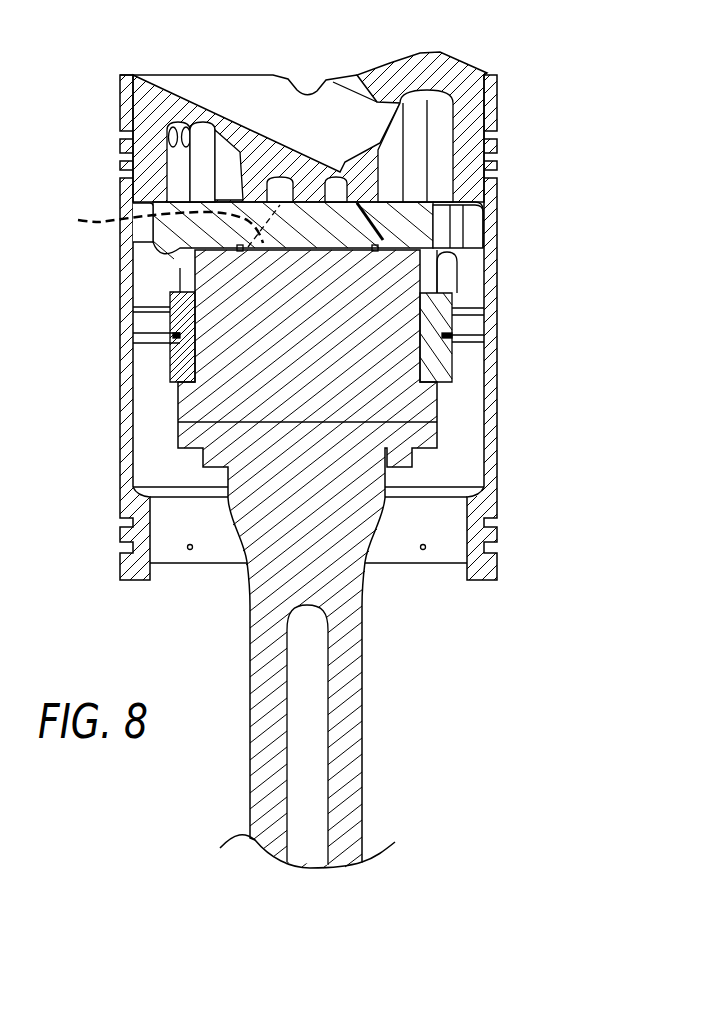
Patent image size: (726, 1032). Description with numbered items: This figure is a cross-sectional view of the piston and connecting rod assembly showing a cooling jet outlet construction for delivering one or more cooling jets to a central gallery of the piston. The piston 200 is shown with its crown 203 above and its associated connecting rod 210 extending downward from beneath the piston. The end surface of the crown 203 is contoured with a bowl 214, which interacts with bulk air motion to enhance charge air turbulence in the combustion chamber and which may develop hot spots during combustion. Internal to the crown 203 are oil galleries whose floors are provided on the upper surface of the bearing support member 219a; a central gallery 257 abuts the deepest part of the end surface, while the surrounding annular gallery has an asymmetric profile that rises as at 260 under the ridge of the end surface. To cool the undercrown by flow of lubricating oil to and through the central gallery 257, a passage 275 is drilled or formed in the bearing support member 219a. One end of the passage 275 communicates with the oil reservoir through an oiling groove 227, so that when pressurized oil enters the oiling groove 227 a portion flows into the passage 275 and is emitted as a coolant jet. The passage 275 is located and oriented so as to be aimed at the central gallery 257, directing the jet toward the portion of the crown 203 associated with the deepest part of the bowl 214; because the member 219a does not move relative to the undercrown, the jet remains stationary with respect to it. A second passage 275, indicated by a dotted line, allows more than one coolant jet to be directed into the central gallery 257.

The piston 200 is at (325, 439).
The crown 203 is at (119, 113).
The connecting rod 210 is at (372, 717).
The bowl 214 is at (317, 120).
The bearing support member 219a is at (420, 220).
The oiling groove 227 is at (238, 250).
The central gallery 257 is at (300, 195).
The highest point of annular gallery 260 is at (433, 130).
The passage 275 is at (537, 190).